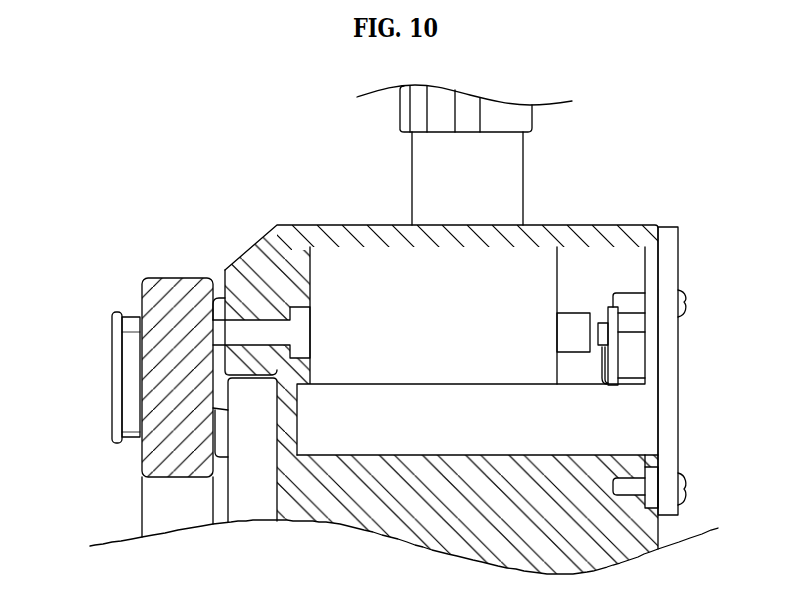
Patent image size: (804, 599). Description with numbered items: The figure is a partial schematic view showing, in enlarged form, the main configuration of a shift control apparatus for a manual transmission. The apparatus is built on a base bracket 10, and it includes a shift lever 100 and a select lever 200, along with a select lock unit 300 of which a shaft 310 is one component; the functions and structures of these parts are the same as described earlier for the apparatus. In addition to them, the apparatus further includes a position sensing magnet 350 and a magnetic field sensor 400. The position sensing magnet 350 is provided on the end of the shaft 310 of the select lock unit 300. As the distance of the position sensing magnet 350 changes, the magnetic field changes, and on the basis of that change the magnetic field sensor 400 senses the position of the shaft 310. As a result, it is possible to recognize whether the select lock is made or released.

The base bracket 10 is at (622, 517).
The shift lever 100 is at (527, 118).
The select lever 200 is at (163, 370).
The select lock unit 300 is at (528, 280).
The shaft 310 is at (250, 333).
The position sensing magnet 350 is at (582, 327).
The magnetic field sensor 400 is at (603, 337).